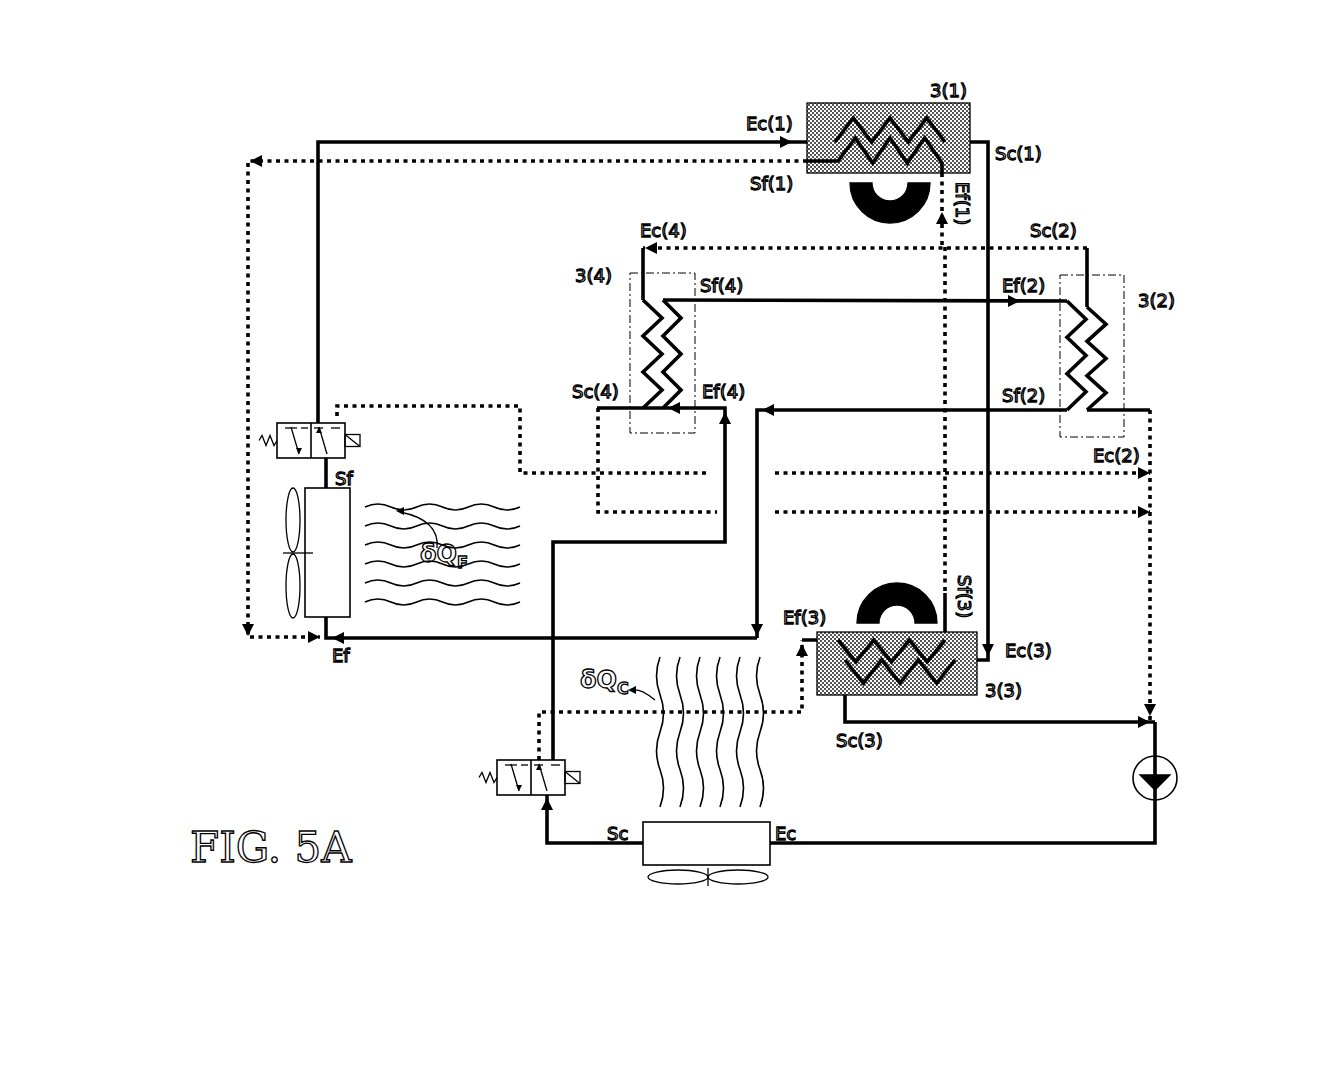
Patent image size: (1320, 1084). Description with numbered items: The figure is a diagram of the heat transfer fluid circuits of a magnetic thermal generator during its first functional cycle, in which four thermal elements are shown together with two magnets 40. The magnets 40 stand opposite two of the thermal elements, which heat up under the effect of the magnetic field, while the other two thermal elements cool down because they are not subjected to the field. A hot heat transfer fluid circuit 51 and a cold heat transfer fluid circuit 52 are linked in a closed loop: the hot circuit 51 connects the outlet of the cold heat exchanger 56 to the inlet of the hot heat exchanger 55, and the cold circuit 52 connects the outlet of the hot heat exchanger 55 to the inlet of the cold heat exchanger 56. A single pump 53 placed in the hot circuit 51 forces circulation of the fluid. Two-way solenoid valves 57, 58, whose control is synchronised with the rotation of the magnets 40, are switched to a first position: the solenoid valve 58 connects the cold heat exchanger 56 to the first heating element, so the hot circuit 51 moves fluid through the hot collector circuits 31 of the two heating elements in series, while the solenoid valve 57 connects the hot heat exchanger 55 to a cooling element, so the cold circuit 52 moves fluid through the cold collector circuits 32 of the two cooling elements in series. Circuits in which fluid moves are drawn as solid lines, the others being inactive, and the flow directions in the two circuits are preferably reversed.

The hot collector circuit 31 is at (850, 108).
The cold collector circuit 32 is at (906, 108).
The magnet 40 is at (868, 200).
The hot heat transfer fluid circuit 51 is at (312, 321).
The cold heat transfer fluid circuit 52 is at (480, 642).
The pump 53 is at (1180, 779).
The hot heat exchanger 55 is at (650, 855).
The cold heat exchanger 56 is at (315, 555).
The two-way solenoid valve 57 is at (497, 795).
The two-way solenoid valve 58 is at (275, 438).